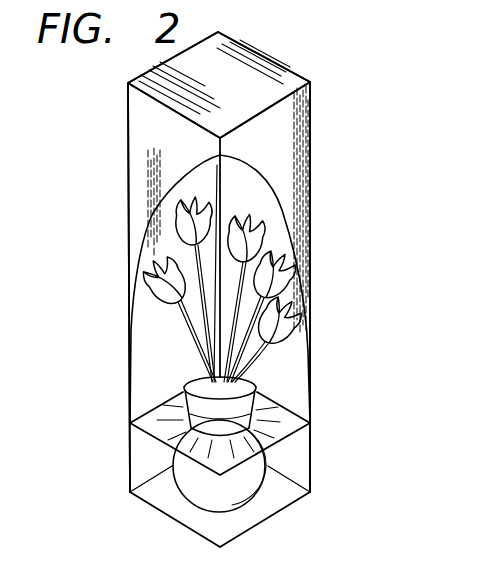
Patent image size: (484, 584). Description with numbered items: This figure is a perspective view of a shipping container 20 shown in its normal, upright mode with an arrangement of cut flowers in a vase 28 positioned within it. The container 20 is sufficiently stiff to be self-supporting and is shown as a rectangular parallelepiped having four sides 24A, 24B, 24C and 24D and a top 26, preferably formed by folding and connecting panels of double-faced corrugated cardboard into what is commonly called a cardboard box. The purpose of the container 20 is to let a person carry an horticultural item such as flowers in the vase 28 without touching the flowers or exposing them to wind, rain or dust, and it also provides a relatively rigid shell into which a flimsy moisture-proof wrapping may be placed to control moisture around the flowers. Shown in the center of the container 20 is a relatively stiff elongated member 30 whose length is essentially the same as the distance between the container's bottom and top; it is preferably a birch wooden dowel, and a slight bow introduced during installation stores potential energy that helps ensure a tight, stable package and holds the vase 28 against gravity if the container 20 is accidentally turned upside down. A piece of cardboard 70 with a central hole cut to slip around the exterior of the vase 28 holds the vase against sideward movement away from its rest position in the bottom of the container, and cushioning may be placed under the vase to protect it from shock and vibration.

The shipping container 20 is at (127, 250).
The side 24A is at (290, 133).
The side 24B is at (153, 131).
The side 24C is at (147, 372).
The side 24D is at (296, 378).
The top 26 is at (237, 83).
The vase 28 is at (280, 367).
The elongated member 30 is at (220, 195).
The piece of cardboard 70 is at (294, 424).